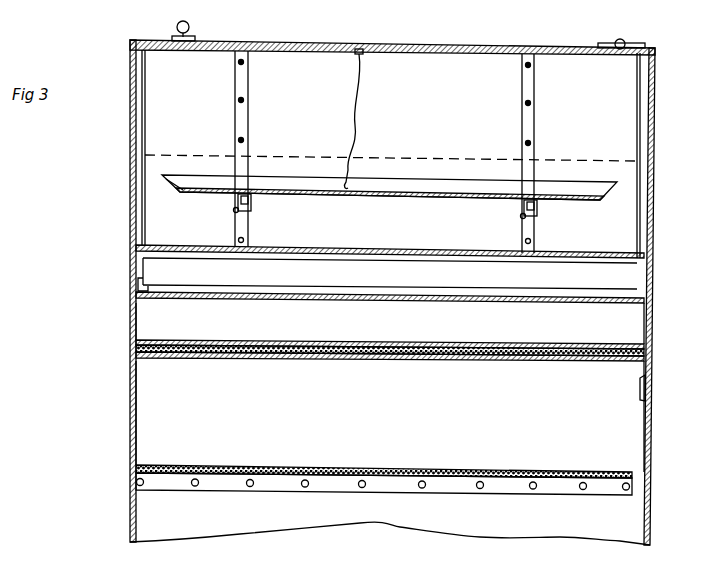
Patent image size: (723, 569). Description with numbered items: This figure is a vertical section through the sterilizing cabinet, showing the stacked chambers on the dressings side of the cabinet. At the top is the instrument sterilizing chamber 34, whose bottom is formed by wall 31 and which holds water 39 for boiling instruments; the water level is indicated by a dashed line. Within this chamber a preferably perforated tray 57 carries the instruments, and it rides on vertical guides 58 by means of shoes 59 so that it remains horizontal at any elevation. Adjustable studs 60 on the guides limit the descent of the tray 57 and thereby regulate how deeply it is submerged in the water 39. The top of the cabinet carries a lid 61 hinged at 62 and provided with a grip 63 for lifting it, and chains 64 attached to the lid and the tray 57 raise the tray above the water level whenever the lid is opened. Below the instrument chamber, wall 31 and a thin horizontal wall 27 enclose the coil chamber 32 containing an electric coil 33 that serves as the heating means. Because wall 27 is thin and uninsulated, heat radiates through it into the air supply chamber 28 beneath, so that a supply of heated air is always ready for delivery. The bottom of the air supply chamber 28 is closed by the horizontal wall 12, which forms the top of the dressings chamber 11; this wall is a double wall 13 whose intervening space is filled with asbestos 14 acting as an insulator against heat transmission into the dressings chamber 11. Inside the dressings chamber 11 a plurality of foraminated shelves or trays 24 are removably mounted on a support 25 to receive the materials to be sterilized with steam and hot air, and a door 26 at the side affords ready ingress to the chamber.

The dressings chamber 11 is at (478, 434).
The horizontal wall 12 is at (290, 347).
The double wall 13 is at (220, 345).
The asbestos 14 is at (247, 355).
The trays 24 is at (330, 453).
The support 25 is at (340, 486).
The door 26 is at (648, 458).
The horizontal wall 27 is at (383, 285).
The air supply chamber 28 is at (408, 322).
The wall 31 is at (366, 250).
The coil chamber 32 is at (404, 256).
The electric coil 33 is at (444, 267).
The instrument sterilizing chamber 34 is at (462, 77).
The water 39 is at (568, 162).
The tray 57 is at (285, 190).
The vertical guides 58 is at (249, 109).
The shoes 59 is at (251, 203).
The adjustable studs 60 is at (236, 212).
The lid 61 is at (363, 43).
The hinge 62 is at (626, 32).
The grip 63 is at (189, 25).
The chains 64 is at (356, 98).